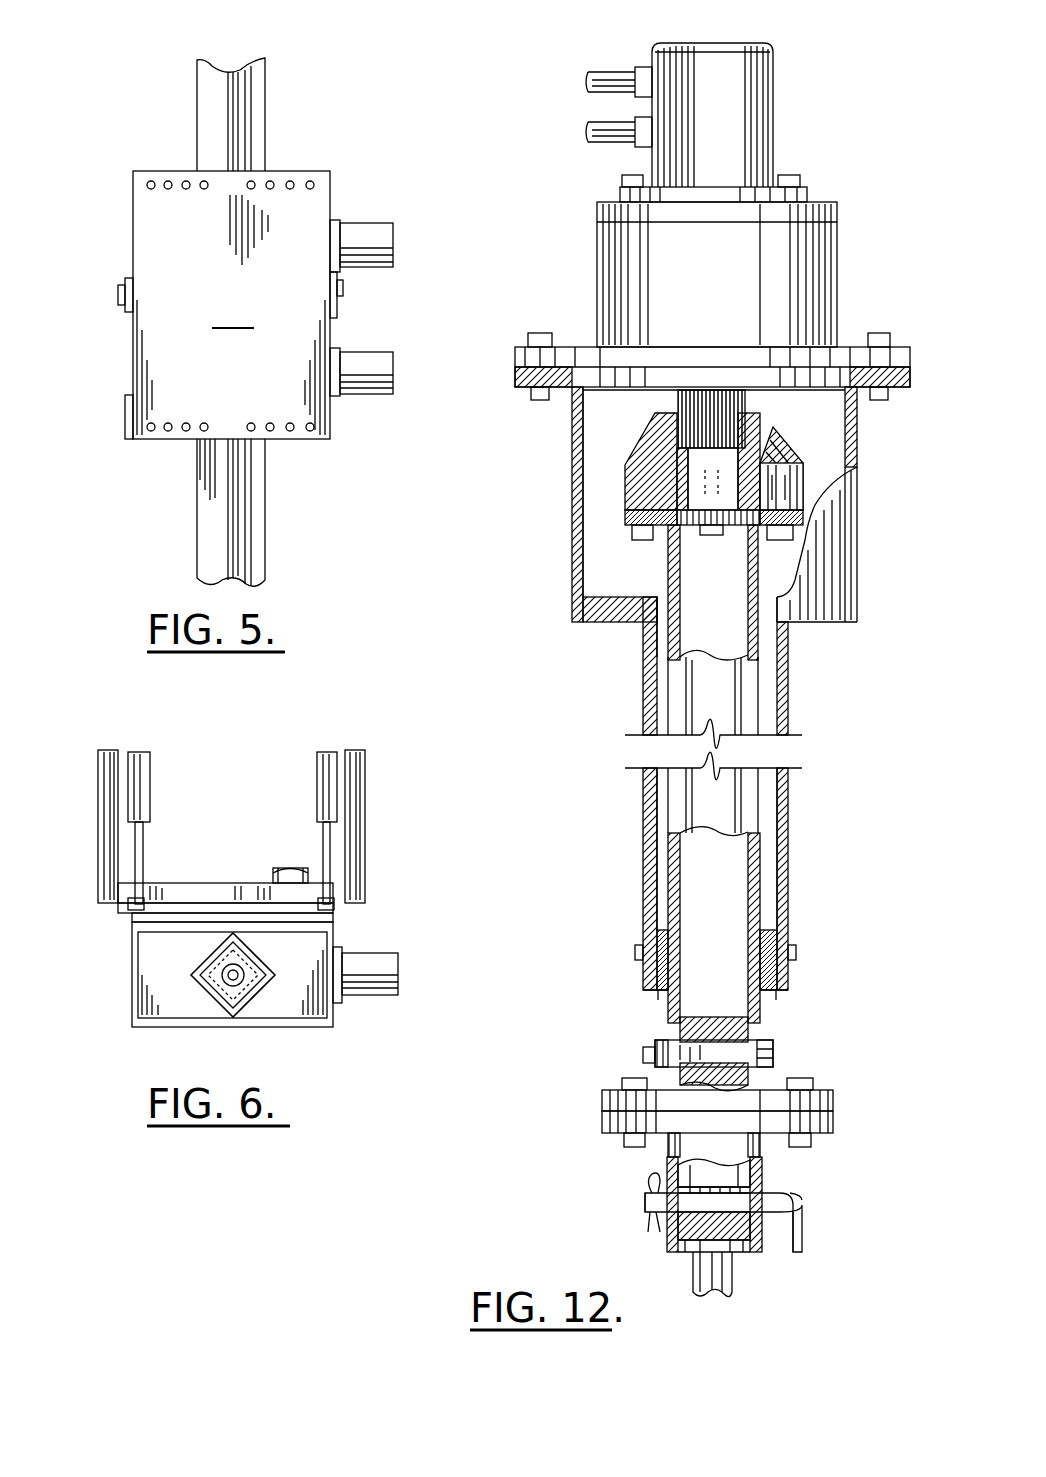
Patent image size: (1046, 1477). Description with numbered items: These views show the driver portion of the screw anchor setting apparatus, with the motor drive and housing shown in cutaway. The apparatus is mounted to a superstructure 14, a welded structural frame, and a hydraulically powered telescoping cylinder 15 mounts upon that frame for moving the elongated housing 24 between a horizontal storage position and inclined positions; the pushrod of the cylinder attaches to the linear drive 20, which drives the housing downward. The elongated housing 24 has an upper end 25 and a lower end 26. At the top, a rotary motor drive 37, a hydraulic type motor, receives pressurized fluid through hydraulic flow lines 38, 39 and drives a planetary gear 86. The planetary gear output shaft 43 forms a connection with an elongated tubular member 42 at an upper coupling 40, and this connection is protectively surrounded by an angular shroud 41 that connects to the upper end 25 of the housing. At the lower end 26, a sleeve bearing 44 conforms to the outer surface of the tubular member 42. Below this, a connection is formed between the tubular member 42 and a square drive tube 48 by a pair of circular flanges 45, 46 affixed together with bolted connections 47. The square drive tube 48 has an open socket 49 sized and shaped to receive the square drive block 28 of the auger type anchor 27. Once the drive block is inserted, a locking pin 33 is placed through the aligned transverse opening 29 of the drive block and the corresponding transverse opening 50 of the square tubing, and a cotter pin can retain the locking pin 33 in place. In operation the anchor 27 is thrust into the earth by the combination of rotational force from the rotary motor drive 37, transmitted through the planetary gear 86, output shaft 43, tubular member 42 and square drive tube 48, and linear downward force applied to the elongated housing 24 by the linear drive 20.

In FIG. 6, the superstructure 14 is at (106, 806).
In FIG. 6, the telescoping cylinder 15 is at (150, 780).
In FIG. 5, the linear drive 20 is at (255, 305).
In FIG. 6, the linear drive 20 is at (132, 975).
In FIG. 5, the elongated housing 24 is at (208, 136).
In FIG. 6, the elongated housing 24 is at (212, 998).
In FIG. 12, the elongated housing 24 is at (643, 704).
In FIG. 12, the upper end 25 is at (643, 645).
In FIG. 12, the lower end 26 is at (643, 908).
In FIG. 12, the auger type anchor 27 is at (736, 1275).
In FIG. 12, the square drive block 28 is at (708, 1230).
In FIG. 12, the transverse opening 29 is at (765, 1178).
In FIG. 12, the locking pin 33 is at (793, 1200).
In FIG. 12, the rotary motor drive 37 is at (698, 72).
In FIG. 12, the hydraulic flow line 38 is at (615, 82).
In FIG. 12, the hydraulic flow line 39 is at (615, 134).
In FIG. 12, the upper coupling 40 is at (628, 475).
In FIG. 12, the shroud 41 is at (572, 444).
In FIG. 12, the tubular member 42 is at (668, 553).
In FIG. 12, the planetary gear output shaft 43 is at (748, 398).
In FIG. 12, the sleeve bearing 44 is at (790, 980).
In FIG. 12, the flange 45 is at (602, 1097).
In FIG. 12, the flange 46 is at (602, 1122).
In FIG. 12, the bolted connection 47 is at (640, 1078).
In FIG. 12, the square drive tube 48 is at (667, 1157).
In FIG. 12, the open socket 49 is at (733, 1160).
In FIG. 12, the transverse opening 50 is at (768, 1215).
In FIG. 12, the planetary gear 86 is at (837, 284).